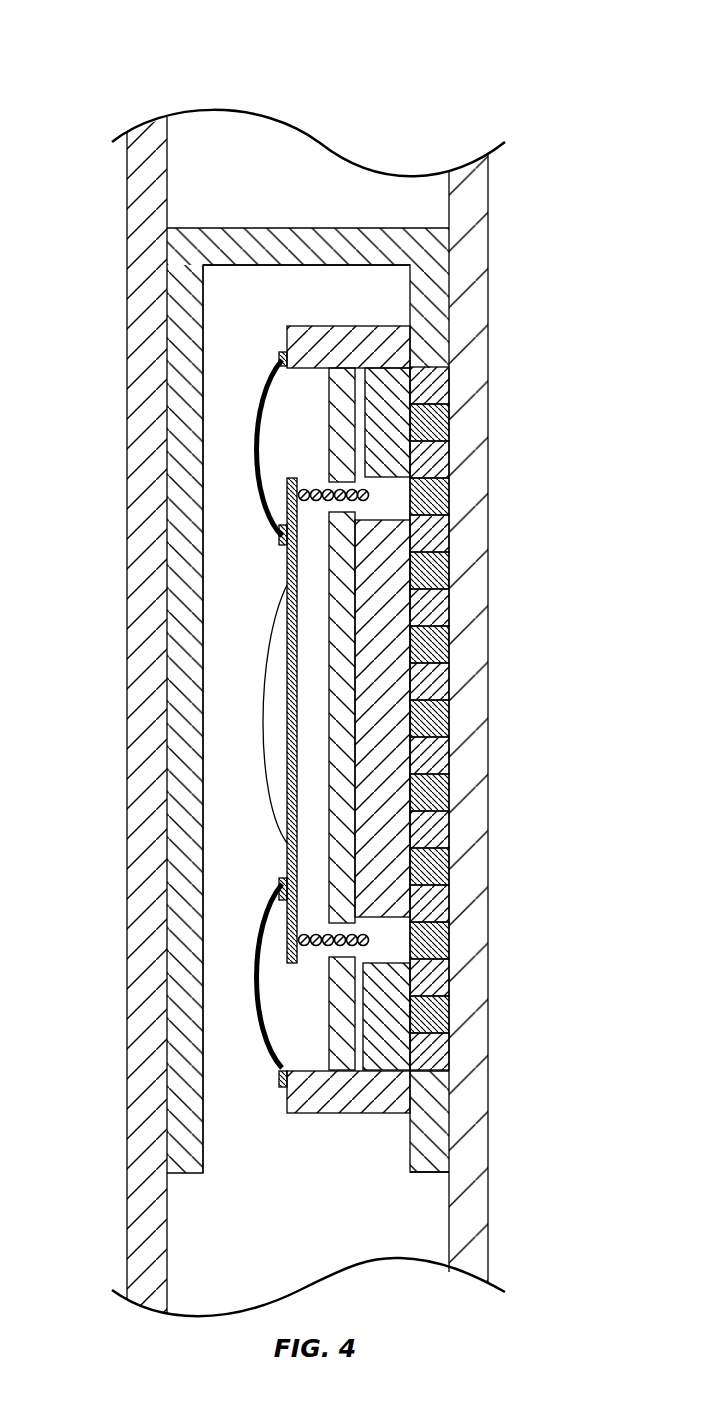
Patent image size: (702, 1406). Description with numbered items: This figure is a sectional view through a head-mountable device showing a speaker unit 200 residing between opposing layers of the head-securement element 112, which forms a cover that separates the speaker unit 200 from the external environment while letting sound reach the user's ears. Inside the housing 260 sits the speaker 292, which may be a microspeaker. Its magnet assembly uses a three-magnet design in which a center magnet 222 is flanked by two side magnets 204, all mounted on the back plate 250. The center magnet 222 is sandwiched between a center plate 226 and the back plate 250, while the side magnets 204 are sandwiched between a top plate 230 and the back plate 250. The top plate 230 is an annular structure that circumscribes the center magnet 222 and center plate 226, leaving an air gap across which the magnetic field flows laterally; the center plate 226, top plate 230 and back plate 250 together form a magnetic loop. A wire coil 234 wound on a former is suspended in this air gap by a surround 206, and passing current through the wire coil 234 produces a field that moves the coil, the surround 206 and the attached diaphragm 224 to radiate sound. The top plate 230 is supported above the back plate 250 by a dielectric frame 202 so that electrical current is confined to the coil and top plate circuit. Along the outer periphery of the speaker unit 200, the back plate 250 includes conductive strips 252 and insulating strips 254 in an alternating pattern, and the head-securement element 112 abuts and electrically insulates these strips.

The speaker unit 200 is at (197, 124).
The head-securement element 112 is at (127, 202).
The housing 260 is at (427, 283).
The back plate 250 is at (425, 1160).
The speaker 292 is at (221, 340).
The frame 202 is at (297, 333).
The top plate 230 is at (340, 377).
The side magnets 204 is at (393, 387).
The center plate 226 is at (340, 590).
The center magnet 222 is at (393, 828).
The conductive strips 252 is at (433, 422).
The insulating strips 254 is at (433, 459).
The wire coil 234 is at (317, 945).
The surround 206 is at (257, 462).
The diaphragm 224 is at (285, 865).